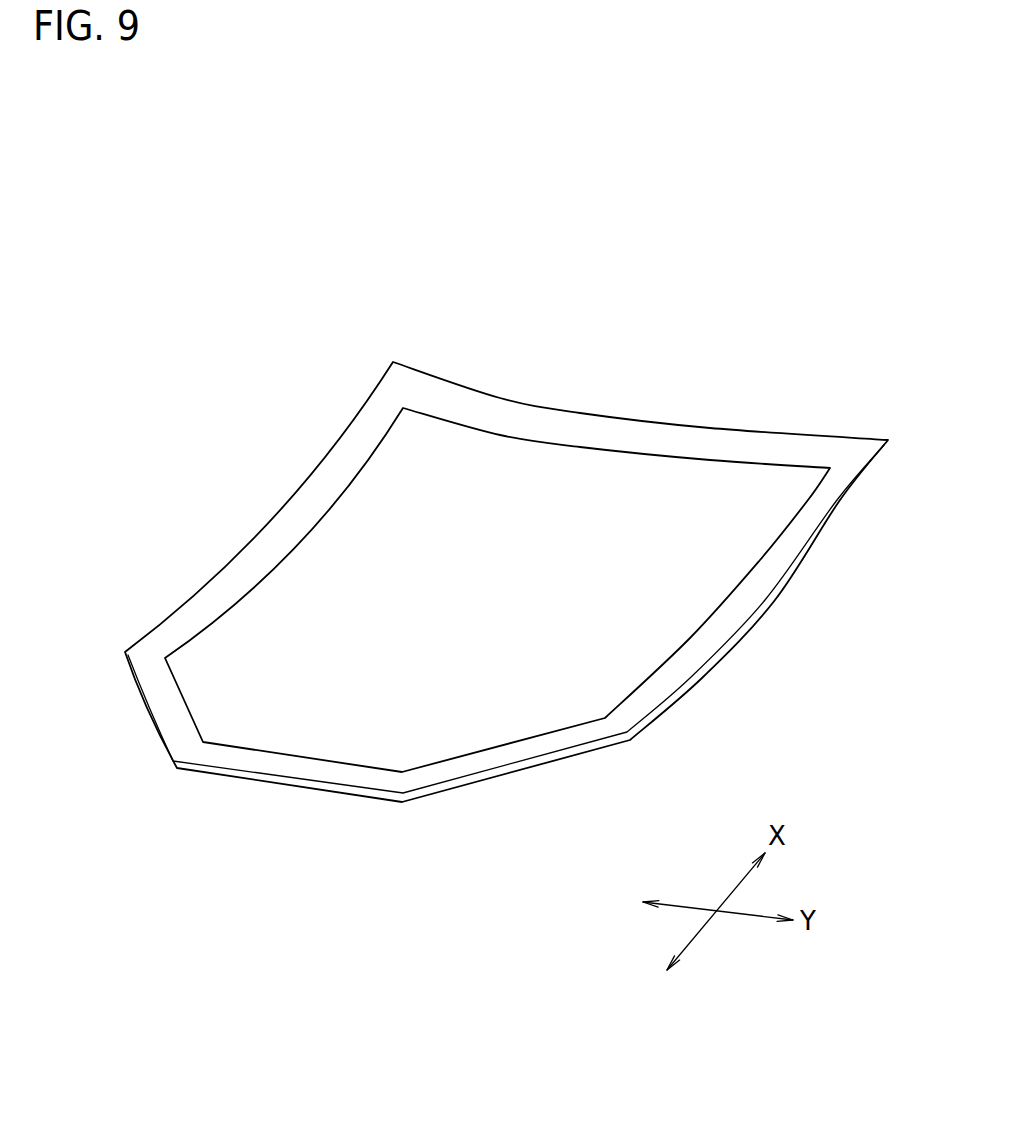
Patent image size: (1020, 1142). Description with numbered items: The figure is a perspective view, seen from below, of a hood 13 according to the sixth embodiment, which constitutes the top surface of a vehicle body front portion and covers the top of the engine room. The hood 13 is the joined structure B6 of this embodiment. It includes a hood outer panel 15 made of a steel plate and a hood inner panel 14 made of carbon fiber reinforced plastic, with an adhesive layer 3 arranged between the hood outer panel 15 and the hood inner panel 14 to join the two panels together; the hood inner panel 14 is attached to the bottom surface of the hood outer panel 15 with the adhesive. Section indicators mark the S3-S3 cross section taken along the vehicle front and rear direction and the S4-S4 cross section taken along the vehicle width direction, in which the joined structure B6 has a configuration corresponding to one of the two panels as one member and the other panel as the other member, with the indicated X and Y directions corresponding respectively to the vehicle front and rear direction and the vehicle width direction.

The joined structure B6 is at (268, 374).
The hood 13 is at (338, 358).
The hood inner panel 14 is at (281, 553).
The hood outer panel 15 is at (291, 493).
The adhesive layer 3 is at (762, 560).
The S3-S3 cross section S3 is at (627, 392).
The S4-S4 cross section S4 is at (220, 525).